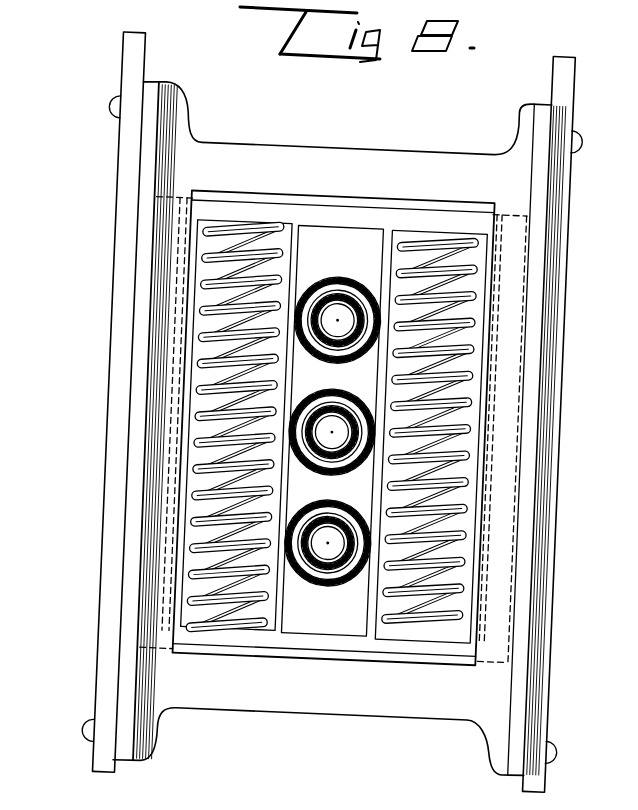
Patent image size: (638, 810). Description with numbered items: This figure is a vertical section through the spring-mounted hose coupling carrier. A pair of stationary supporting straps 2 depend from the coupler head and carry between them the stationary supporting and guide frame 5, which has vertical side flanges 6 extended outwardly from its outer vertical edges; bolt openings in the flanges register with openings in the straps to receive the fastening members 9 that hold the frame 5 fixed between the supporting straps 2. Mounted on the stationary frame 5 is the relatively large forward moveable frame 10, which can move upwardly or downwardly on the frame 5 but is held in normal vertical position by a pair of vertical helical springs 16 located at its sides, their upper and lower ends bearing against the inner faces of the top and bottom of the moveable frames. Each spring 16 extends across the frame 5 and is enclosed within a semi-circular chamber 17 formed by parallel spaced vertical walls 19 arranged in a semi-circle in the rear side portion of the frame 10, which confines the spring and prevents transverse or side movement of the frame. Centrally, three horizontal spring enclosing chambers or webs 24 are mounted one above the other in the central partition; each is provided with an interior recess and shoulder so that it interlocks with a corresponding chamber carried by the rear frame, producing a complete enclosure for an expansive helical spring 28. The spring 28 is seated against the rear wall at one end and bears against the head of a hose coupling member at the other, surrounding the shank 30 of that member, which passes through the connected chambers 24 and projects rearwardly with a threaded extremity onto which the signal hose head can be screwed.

The supporting straps 2 is at (128, 53).
The stationary supporting and guide frame 5 is at (277, 152).
The vertical side flanges 6 is at (523, 567).
The fastening members 9 is at (112, 110).
The forward moveable frame 10 is at (237, 197).
The vertical helical springs 16 is at (210, 318).
The semi-circular chambers 17 is at (463, 400).
The parallel spaced vertical walls 19 is at (473, 437).
The horizontal spring enclosing chambers 24 is at (338, 273).
The expansive helical springs 28 is at (350, 293).
The shank 30 is at (330, 307).